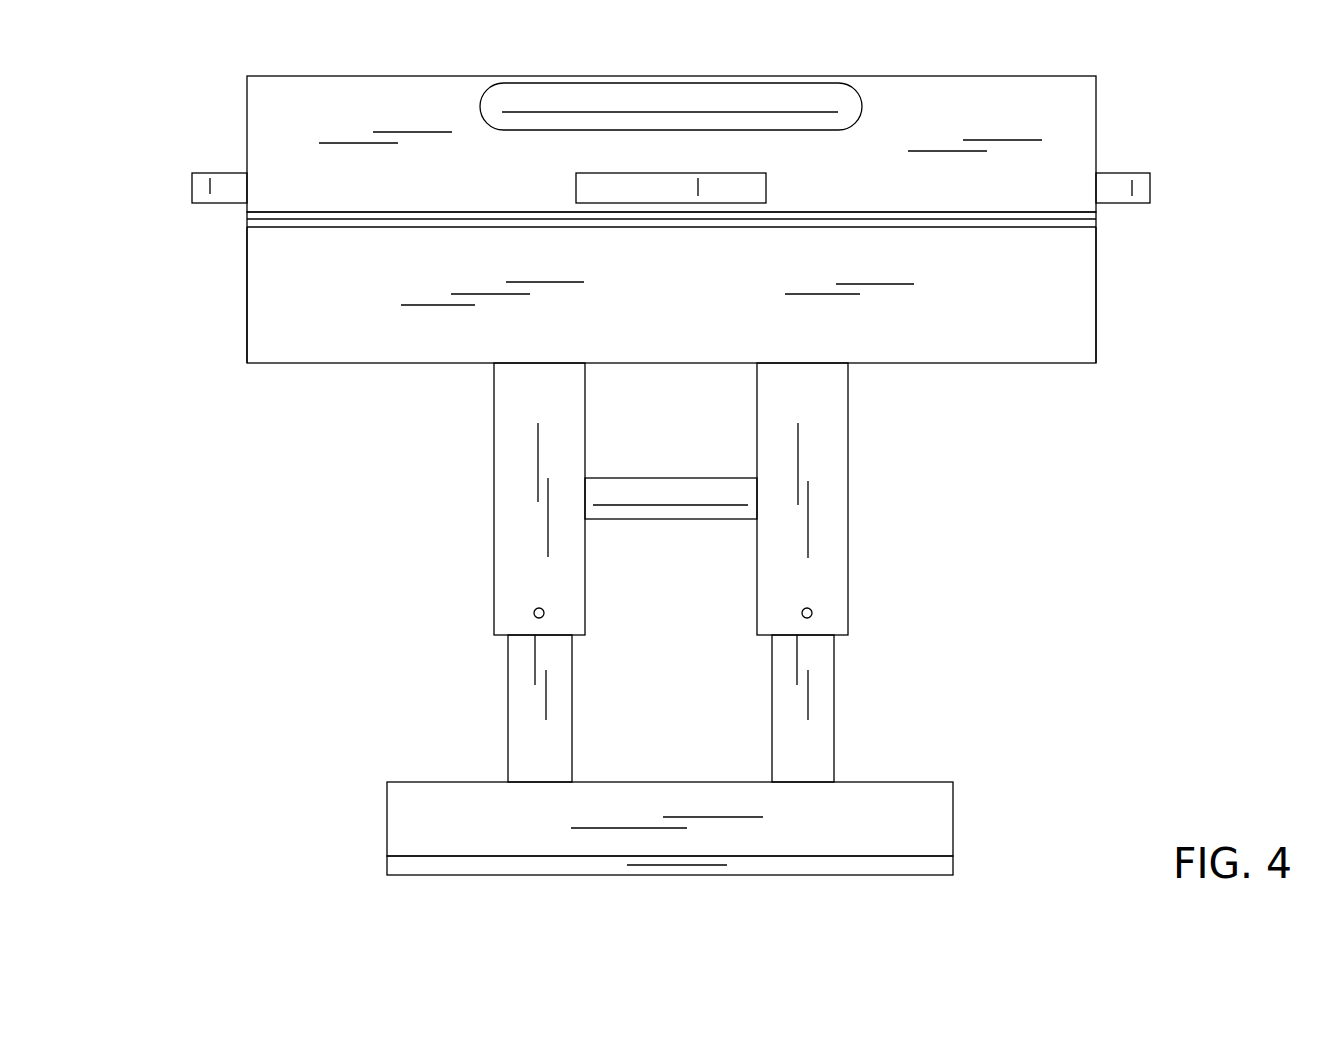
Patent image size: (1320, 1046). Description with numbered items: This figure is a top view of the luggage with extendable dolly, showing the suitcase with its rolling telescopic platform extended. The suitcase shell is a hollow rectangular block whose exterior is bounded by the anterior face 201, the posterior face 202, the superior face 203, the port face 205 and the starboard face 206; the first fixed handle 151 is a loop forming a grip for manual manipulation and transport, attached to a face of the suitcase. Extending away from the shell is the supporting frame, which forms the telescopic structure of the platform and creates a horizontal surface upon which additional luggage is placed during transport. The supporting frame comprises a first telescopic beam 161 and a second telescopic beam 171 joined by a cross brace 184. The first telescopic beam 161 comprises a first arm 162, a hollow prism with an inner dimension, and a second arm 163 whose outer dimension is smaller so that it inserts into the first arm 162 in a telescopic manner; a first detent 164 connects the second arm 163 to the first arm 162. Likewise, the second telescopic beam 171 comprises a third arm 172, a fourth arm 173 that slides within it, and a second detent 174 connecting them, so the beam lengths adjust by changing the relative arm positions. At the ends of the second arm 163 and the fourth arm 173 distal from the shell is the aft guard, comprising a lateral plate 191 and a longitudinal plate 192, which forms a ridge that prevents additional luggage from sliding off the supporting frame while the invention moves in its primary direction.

The first fixed handle 151 is at (223, 185).
The first telescopic beam 161 is at (448, 572).
The first arm 162 is at (498, 531).
The second arm 163 is at (510, 658).
The first detent 164 is at (544, 613).
The second telescopic beam 171 is at (900, 572).
The third arm 172 is at (817, 566).
The fourth arm 173 is at (817, 665).
The second detent 174 is at (812, 612).
The cross brace 184 is at (670, 520).
The lateral plate 191 is at (906, 807).
The longitudinal plate 192 is at (922, 867).
The anterior face 201 is at (902, 76).
The posterior face 202 is at (973, 363).
The superior face 203 is at (1007, 128).
The port face 205 is at (247, 290).
The starboard face 206 is at (1096, 305).